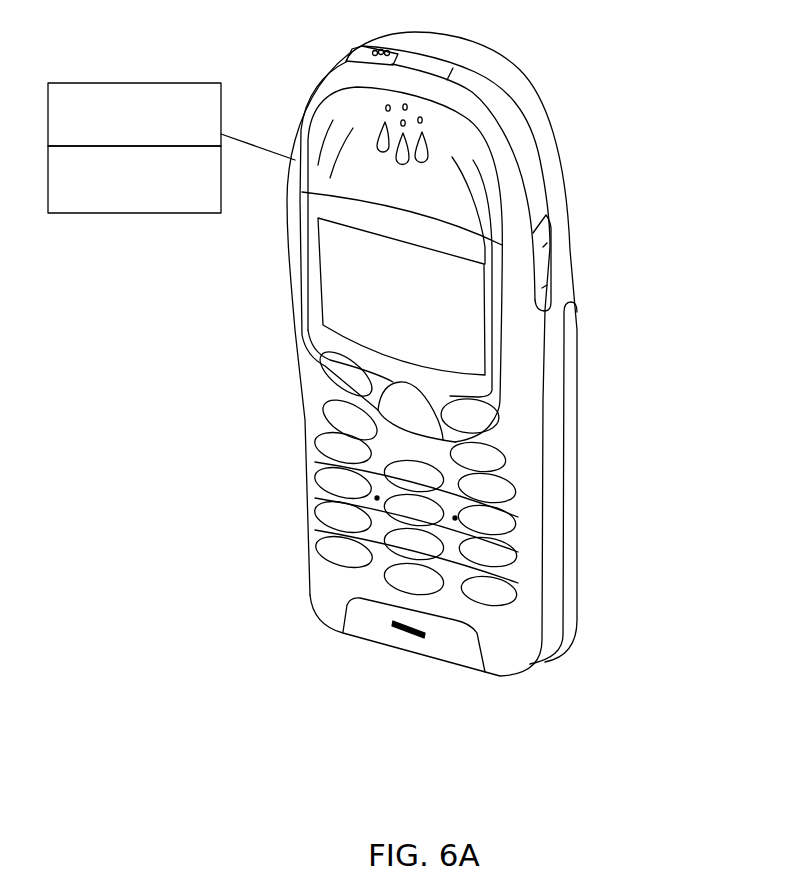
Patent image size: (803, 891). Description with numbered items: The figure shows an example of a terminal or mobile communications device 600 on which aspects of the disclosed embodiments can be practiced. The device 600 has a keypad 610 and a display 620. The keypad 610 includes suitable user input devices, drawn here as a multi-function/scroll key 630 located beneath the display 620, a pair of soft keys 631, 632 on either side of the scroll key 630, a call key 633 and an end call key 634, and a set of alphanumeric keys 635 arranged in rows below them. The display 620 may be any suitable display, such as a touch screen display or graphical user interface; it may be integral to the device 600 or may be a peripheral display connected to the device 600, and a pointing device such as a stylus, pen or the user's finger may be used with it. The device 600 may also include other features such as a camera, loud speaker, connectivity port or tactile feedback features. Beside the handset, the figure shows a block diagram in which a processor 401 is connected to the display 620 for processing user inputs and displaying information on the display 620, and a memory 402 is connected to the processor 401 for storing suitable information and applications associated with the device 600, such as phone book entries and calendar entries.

The processor 401 is at (131, 83).
The memory 402 is at (131, 213).
The mobile communications device 600 is at (531, 43).
The keypad 610 is at (503, 608).
The display 620 is at (455, 323).
The multi-function/scroll key 630 is at (420, 413).
The soft key 631 is at (347, 377).
The soft key 632 is at (483, 413).
The call key 633 is at (342, 415).
The end call key 634 is at (483, 455).
The alphanumeric keys 635 is at (343, 555).